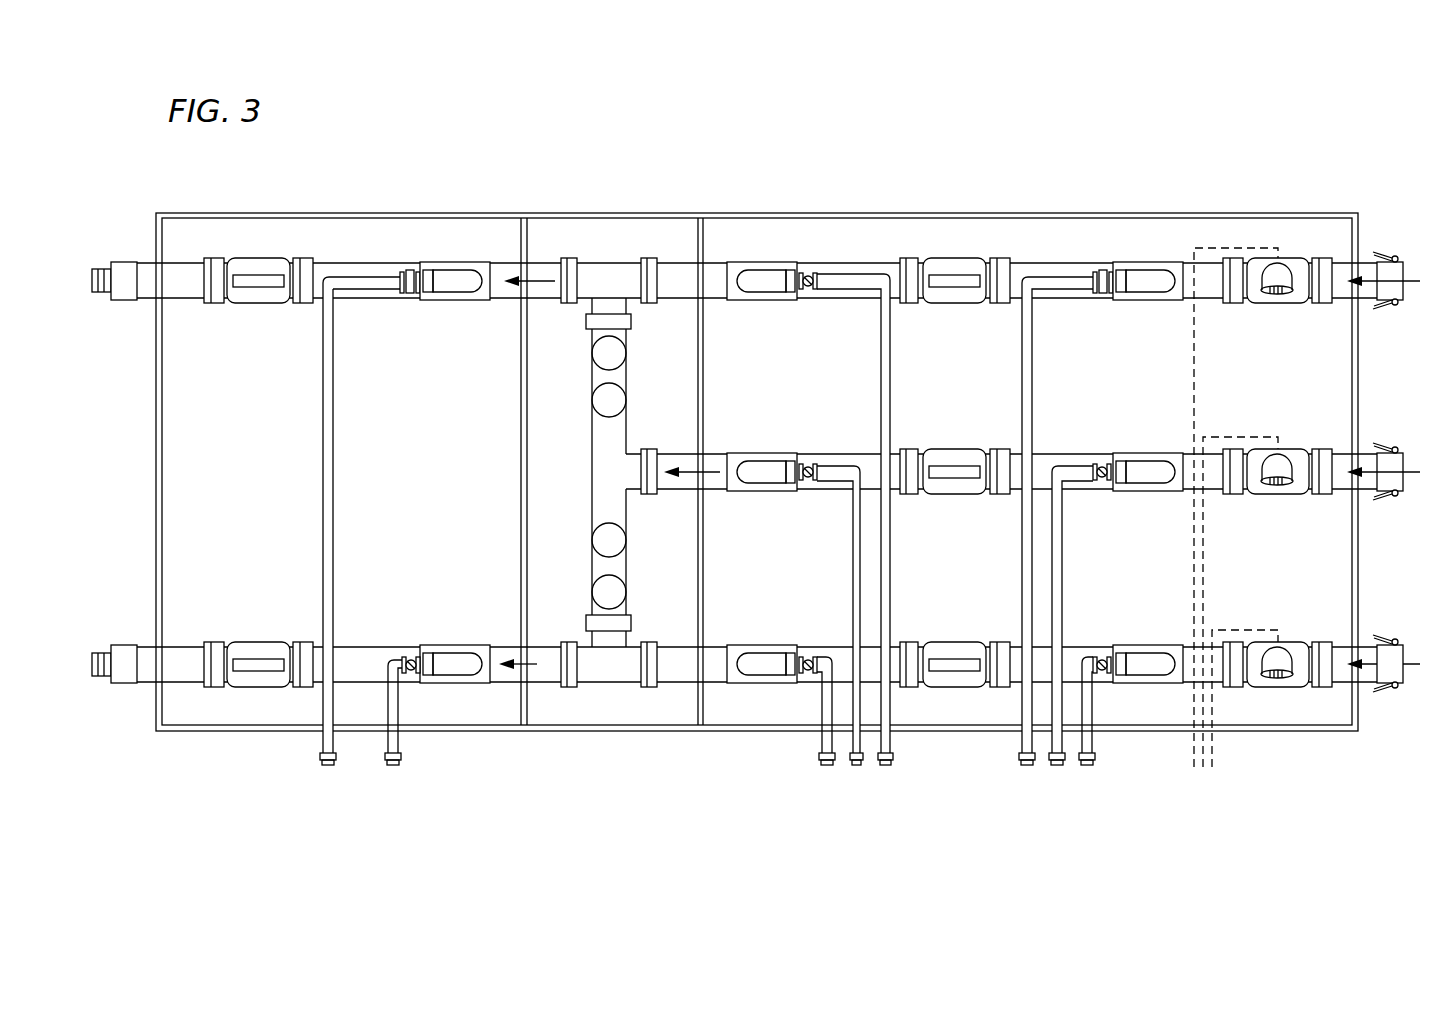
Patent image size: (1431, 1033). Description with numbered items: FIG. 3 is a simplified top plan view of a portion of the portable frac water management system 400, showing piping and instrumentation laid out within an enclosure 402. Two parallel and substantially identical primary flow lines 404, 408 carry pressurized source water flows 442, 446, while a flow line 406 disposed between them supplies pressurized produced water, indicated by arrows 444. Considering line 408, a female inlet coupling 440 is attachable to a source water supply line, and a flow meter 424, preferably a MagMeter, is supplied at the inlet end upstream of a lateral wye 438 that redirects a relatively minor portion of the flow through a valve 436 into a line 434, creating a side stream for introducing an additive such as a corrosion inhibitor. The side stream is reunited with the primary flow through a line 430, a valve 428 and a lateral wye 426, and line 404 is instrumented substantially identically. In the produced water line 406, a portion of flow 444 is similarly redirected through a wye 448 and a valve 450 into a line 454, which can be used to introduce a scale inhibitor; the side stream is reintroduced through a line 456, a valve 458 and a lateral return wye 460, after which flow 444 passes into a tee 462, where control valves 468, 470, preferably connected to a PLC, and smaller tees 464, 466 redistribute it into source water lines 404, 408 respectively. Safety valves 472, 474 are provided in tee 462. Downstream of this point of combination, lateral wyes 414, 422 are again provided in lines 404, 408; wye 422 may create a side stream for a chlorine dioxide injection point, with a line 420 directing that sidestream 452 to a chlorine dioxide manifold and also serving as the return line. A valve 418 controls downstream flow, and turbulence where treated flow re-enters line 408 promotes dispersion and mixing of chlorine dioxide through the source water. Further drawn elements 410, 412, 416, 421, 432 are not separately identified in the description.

The fluid distribution system 400 is at (334, 168).
The housing 402 is at (393, 215).
The primary source water flow line 404 is at (508, 263).
The produced water flow line 406 is at (678, 491).
The primary source water flow line 408 is at (513, 683).
The inlet connector 410 is at (127, 677).
The flow meter 412 is at (243, 301).
The lateral wye 414 is at (458, 301).
The sample tube 416 is at (333, 405).
The valve 418 is at (245, 645).
The line 420 is at (398, 743).
The shutoff valve 421 is at (410, 673).
The lateral wye 422 is at (468, 660).
The flow meter 424 is at (1293, 641).
The lateral wye 426 is at (768, 672).
The valve 428 is at (813, 657).
The line 430 is at (822, 737).
The flow meter 432 is at (945, 642).
The line 434 is at (1092, 737).
The valve 436 is at (1100, 657).
The lateral wye 438 is at (1142, 667).
The female inlet coupling 440 is at (1397, 672).
The source water flow 442 is at (533, 282).
The produced water flow 444 is at (712, 473).
The source water flow 446 is at (535, 667).
The wye 448 is at (1137, 477).
The valve 450 is at (1100, 480).
The sidestream flow 452 is at (938, 449).
The line 454 is at (1057, 590).
The line 456 is at (853, 523).
The valve 458 is at (818, 467).
The lateral return wye 460 is at (767, 476).
The tee 462 is at (620, 381).
The smaller tee 464 is at (628, 291).
The smaller tee 466 is at (628, 675).
The control valve 468 is at (597, 406).
The control valve 470 is at (597, 540).
The safety valve 472 is at (597, 361).
The safety valve 474 is at (597, 582).